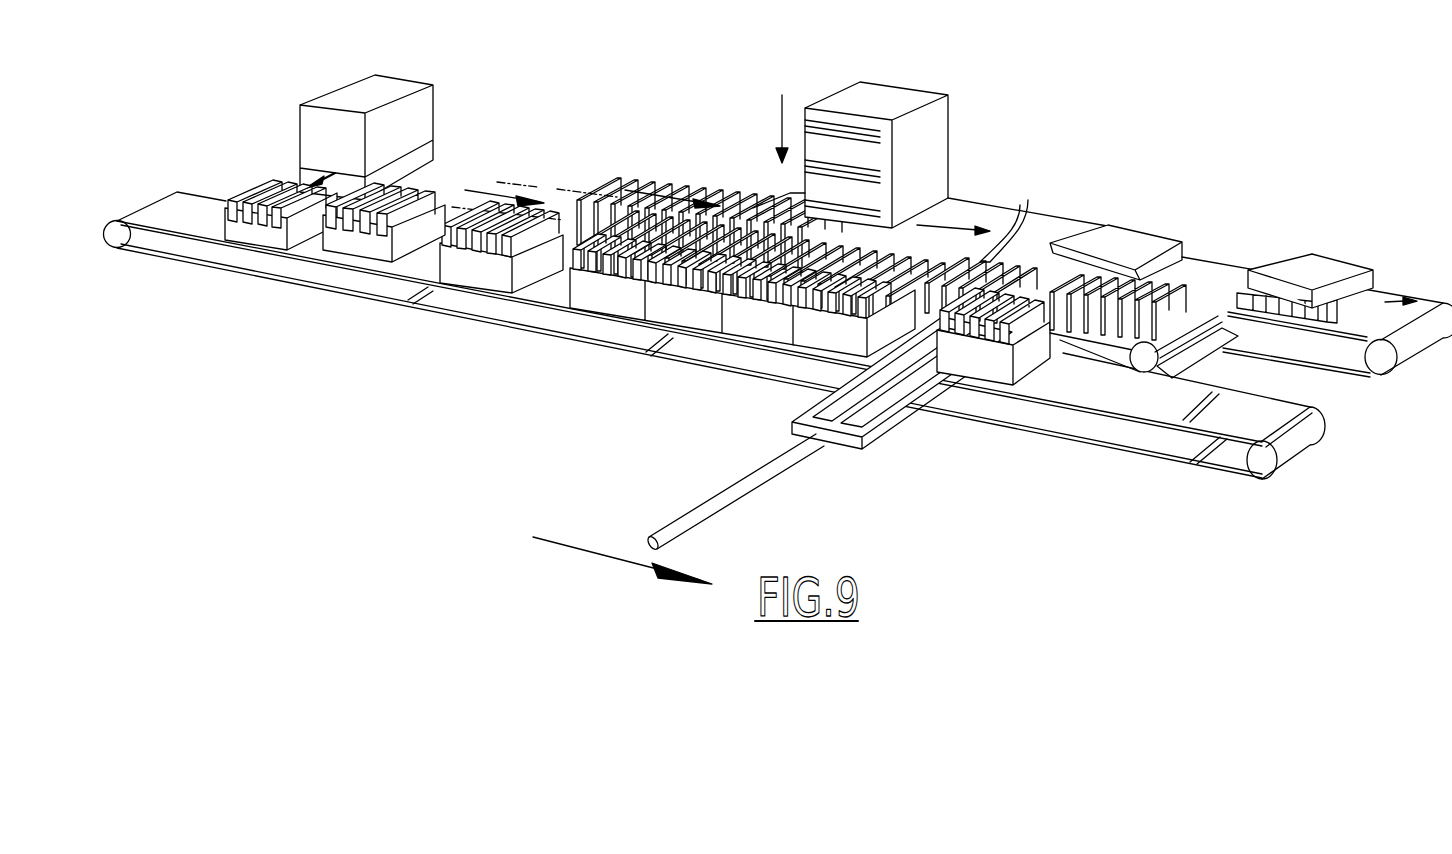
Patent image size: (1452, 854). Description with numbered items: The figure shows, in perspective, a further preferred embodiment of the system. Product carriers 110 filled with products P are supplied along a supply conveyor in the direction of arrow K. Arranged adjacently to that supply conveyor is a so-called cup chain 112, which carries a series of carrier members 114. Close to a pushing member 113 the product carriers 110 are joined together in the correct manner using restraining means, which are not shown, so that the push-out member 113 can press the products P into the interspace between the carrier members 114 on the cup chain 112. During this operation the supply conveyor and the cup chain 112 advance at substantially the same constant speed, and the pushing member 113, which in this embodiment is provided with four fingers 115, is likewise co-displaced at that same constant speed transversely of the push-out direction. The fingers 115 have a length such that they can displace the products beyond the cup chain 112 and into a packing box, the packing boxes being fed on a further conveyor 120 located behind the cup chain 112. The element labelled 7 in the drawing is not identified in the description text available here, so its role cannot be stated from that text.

The pusher station 7 is at (1147, 240).
The product carrier 110 is at (646, 263).
The cup chain 112 is at (663, 194).
The pushing member 113 is at (829, 434).
The carrier members 114 is at (1010, 218).
The fingers 115 is at (813, 397).
The conveyor 120 is at (1418, 302).
The products P is at (253, 192).
The direction of supply K is at (510, 190).